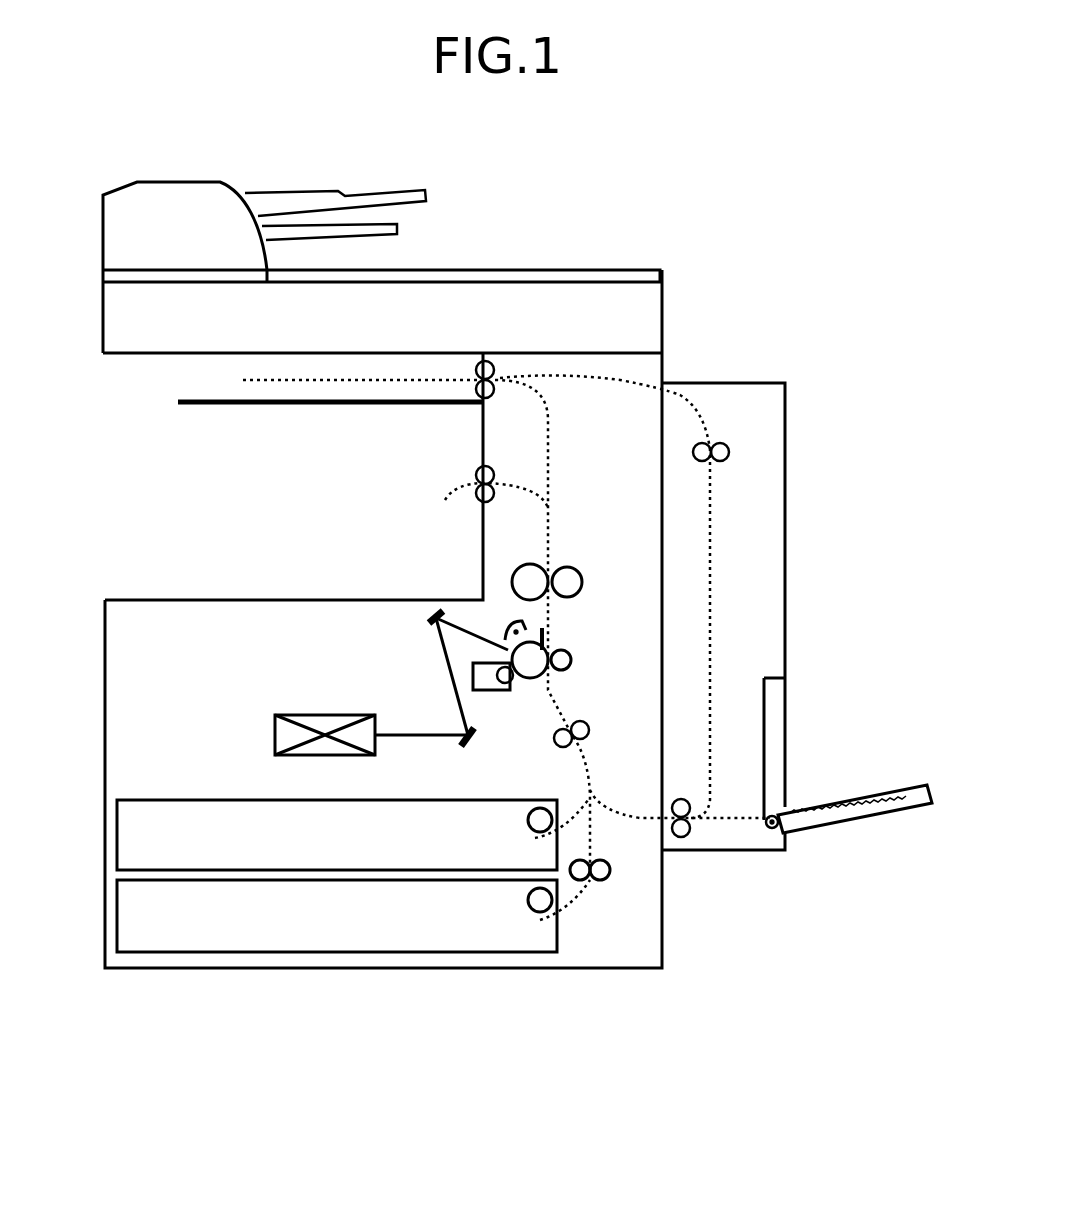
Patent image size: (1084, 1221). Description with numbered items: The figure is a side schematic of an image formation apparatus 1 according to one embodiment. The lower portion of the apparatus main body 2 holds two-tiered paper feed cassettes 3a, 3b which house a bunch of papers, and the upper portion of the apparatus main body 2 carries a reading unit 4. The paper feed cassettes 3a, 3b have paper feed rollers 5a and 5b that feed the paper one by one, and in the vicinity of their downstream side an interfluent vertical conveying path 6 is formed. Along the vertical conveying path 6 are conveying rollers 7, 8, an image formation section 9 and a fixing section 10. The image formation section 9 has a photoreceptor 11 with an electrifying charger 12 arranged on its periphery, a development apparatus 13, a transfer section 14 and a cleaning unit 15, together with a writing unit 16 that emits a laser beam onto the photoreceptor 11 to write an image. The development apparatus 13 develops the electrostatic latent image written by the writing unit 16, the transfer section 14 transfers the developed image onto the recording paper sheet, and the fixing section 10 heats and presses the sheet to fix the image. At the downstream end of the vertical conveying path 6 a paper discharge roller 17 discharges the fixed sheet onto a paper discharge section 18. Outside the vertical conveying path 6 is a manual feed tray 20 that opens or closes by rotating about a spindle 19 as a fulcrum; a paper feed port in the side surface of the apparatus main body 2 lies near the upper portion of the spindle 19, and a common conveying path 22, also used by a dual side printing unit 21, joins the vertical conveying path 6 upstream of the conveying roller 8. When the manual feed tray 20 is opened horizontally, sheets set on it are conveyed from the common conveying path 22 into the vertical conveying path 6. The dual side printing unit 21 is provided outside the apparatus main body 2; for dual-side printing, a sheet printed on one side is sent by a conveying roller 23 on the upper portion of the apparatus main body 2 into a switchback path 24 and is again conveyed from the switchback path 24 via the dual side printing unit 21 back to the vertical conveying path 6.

The image formation apparatus 1 is at (724, 232).
The apparatus main body 2 is at (150, 598).
The paper feed cassette 3a is at (228, 858).
The paper feed cassette 3b is at (328, 937).
The reading unit 4 is at (482, 268).
The paper feed roller 5a is at (528, 830).
The paper feed roller 5b is at (538, 912).
The vertical conveying path 6 is at (558, 690).
The conveying roller 7 is at (600, 882).
The conveying roller 8 is at (594, 742).
The image formation section 9 is at (386, 673).
The fixing section 10 is at (514, 572).
The photoreceptor 11 is at (519, 684).
The electrifying charger 12 is at (427, 603).
The development apparatus 13 is at (496, 692).
The transfer section 14 is at (572, 663).
The cleaning unit 15 is at (550, 640).
The writing unit 16 is at (300, 714).
The paper discharge roller 17 is at (483, 468).
The paper discharge section 18 is at (263, 571).
The spindle 19 is at (785, 838).
The manual feed tray 20 is at (891, 812).
The dual side printing unit 21 is at (760, 468).
The common conveying path 22 is at (643, 828).
The conveying roller 23 is at (497, 355).
The switchback path 24 is at (262, 386).